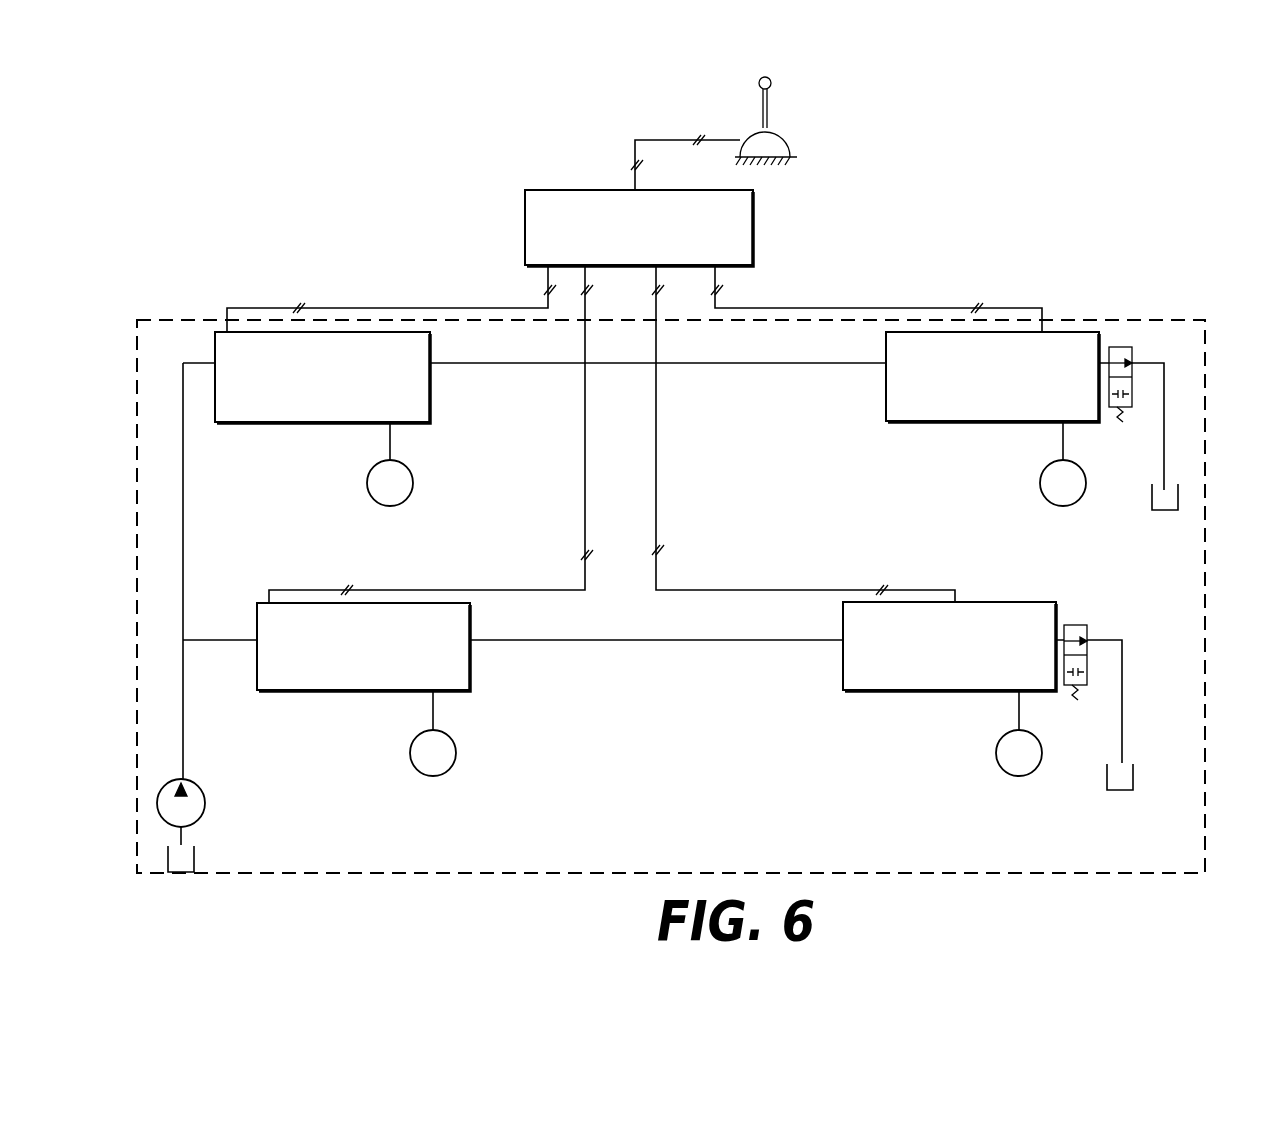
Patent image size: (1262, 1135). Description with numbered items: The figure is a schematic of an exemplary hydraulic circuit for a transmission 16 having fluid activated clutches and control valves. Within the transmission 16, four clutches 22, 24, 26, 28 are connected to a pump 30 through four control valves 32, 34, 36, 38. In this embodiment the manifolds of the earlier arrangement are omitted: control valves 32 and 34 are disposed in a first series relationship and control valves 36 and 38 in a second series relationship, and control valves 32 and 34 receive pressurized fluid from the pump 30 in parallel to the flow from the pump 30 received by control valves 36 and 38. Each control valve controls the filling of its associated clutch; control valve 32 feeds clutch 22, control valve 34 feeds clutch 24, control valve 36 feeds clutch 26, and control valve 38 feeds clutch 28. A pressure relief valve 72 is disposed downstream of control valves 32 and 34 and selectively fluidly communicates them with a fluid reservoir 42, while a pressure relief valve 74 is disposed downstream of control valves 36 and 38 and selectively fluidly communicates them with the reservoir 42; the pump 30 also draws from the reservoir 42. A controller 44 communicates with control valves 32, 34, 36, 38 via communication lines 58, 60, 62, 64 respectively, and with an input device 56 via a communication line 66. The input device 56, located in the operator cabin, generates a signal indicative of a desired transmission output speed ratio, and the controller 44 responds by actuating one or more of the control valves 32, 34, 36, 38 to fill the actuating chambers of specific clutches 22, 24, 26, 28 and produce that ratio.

The transmission 16 is at (1205, 820).
The clutch 22 is at (413, 483).
The clutch 24 is at (1040, 485).
The clutch 26 is at (456, 753).
The clutch 28 is at (996, 753).
The pump 30 is at (205, 803).
The control valve 32 is at (322, 377).
The control valve 34 is at (992, 377).
The control valve 36 is at (363, 647).
The control valve 38 is at (949, 646).
The fluid reservoir 42 is at (194, 852).
The controller 44 is at (753, 232).
The input device 56 is at (772, 85).
The communication line 58 is at (358, 307).
The communication line 60 is at (840, 308).
The communication line 62 is at (585, 540).
The communication line 64 is at (656, 500).
The communication line 66 is at (651, 140).
The pressure relief valve 72 is at (1135, 351).
The pressure relief valve 74 is at (1090, 630).